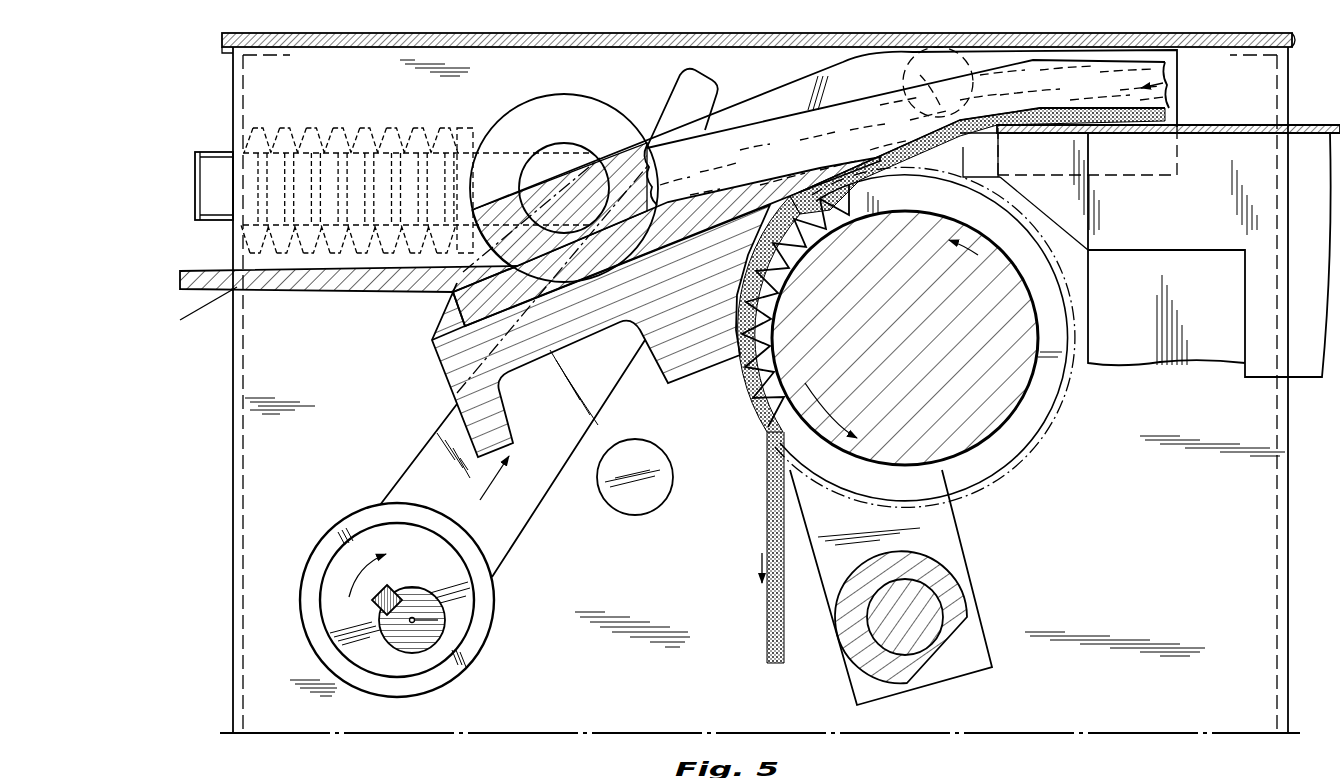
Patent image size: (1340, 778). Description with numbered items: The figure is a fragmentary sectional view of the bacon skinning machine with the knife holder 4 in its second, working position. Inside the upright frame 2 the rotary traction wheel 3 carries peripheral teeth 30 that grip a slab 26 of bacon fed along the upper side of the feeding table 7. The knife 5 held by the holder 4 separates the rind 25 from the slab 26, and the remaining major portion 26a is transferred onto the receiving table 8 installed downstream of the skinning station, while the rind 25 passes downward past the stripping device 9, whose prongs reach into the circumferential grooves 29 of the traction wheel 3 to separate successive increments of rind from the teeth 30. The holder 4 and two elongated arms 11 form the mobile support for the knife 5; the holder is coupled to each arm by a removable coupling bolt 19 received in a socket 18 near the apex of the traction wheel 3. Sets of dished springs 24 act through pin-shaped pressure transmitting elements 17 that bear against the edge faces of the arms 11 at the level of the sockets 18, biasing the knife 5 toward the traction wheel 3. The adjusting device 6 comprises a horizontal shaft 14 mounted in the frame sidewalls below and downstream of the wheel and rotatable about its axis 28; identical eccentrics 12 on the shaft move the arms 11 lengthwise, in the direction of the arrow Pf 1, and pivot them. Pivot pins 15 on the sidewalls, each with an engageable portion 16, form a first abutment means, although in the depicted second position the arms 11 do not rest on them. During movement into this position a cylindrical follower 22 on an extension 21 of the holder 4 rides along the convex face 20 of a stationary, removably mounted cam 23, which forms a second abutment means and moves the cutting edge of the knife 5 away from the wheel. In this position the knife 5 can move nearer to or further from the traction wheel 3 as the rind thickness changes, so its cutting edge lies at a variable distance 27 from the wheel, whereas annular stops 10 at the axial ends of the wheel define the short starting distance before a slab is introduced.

The frame 2 is at (229, 367).
The traction wheel 3 is at (980, 422).
The holder 4 is at (698, 379).
The knife 5 is at (833, 171).
The adjusting device 6 is at (404, 428).
The feeding table 7 is at (1238, 125).
The receiving table 8 is at (318, 289).
The stripping device 9 is at (950, 530).
The annular stops 10 is at (1060, 426).
The arms 11 is at (527, 520).
The eccentrics 12 is at (461, 597).
The shaft 14 is at (437, 623).
The pivot pins 15 is at (657, 492).
The portion of pivot pin 16 is at (602, 460).
The pressure transmitting elements 17 is at (571, 99).
The socket 18 is at (661, 163).
The coupling bolt 19 is at (851, 141).
The convex face 20 is at (1130, 80).
The extension 21 is at (798, 80).
The follower 22 is at (903, 85).
The cam 23 is at (1127, 177).
The dished springs 24 is at (380, 130).
The rind 25 is at (772, 622).
The slab 26 is at (1163, 82).
The major portion 26a is at (672, 140).
The distance 27 is at (897, 183).
The axis 28 is at (413, 622).
The grooves 29 is at (1048, 387).
The teeth 30 is at (747, 410).
The arrow Pf 1 is at (490, 495).